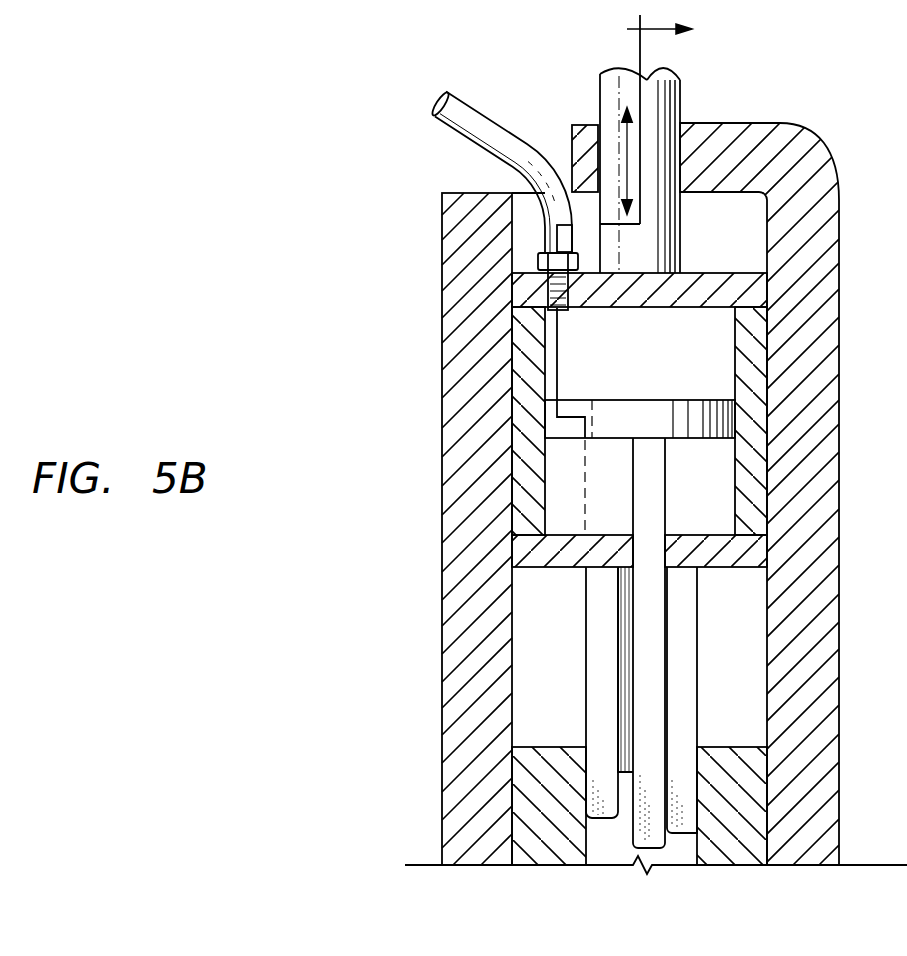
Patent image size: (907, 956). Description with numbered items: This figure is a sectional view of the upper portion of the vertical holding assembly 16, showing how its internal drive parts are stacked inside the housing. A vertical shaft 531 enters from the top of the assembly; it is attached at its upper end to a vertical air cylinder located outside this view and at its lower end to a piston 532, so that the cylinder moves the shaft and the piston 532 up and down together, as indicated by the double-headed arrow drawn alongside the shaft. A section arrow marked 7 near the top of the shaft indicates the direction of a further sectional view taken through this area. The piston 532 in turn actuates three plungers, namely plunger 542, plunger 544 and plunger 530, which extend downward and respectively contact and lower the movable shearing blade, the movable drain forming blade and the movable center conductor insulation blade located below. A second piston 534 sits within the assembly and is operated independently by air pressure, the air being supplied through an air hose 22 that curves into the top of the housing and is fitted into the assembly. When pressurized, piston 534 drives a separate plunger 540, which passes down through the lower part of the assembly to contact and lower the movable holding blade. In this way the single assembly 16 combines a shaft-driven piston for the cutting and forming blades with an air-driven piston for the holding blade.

The vertical holding assembly 16 is at (843, 528).
The air hose 22 is at (470, 108).
The vertical shaft 531 is at (683, 95).
The piston 532 is at (718, 270).
The piston 534 is at (643, 398).
The plunger 540 is at (651, 617).
The plunger 542 is at (680, 694).
The plunger 544 is at (600, 618).
The plunger 530 is at (620, 691).
The section line for FIG. 7 is at (646, 30).